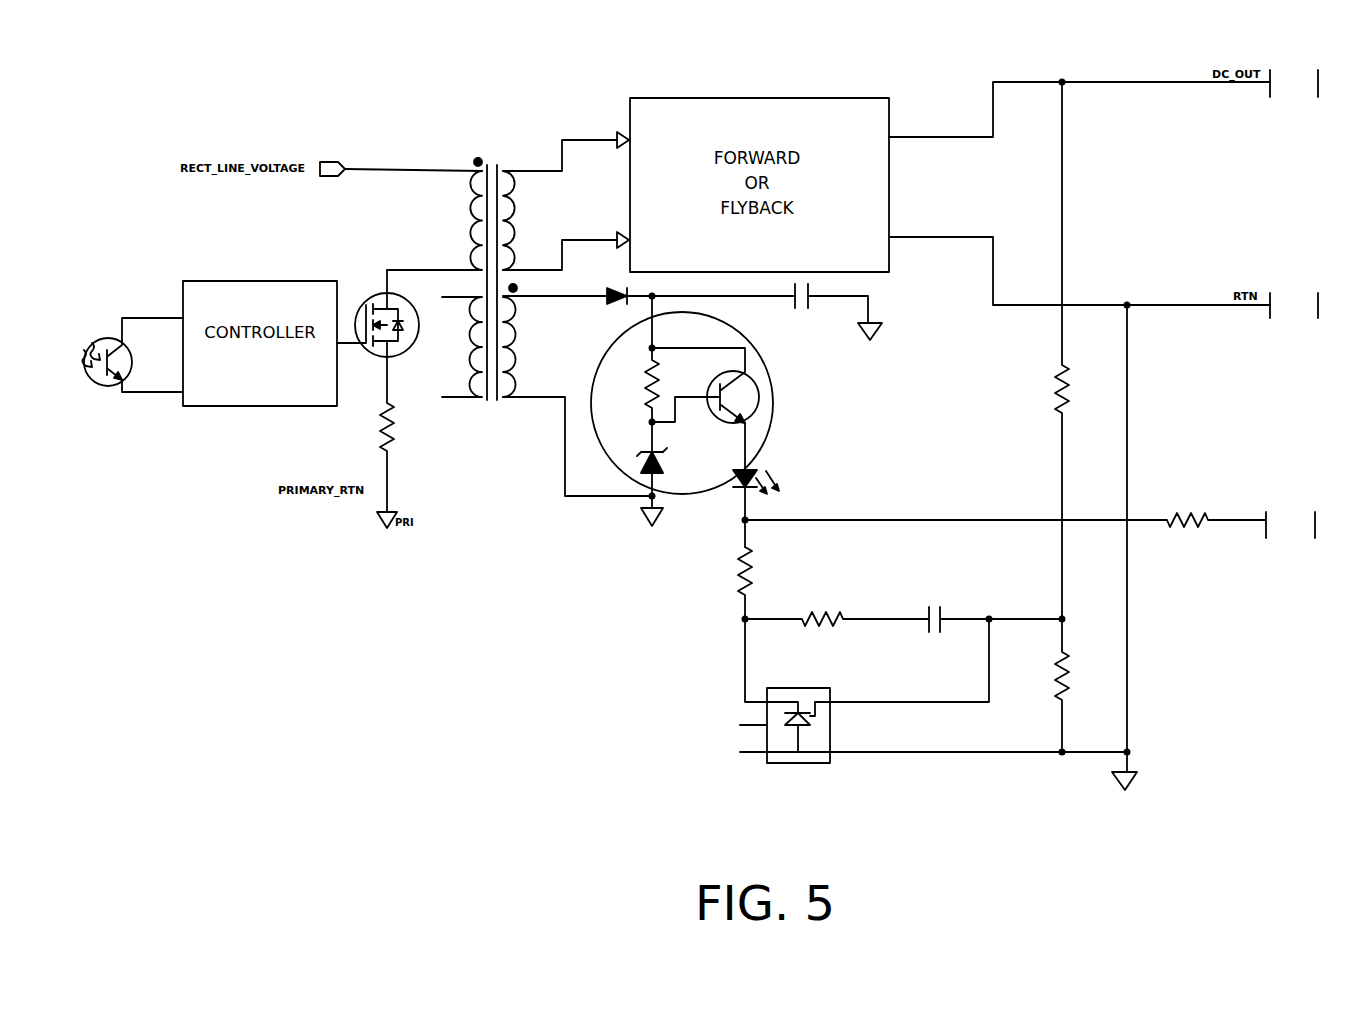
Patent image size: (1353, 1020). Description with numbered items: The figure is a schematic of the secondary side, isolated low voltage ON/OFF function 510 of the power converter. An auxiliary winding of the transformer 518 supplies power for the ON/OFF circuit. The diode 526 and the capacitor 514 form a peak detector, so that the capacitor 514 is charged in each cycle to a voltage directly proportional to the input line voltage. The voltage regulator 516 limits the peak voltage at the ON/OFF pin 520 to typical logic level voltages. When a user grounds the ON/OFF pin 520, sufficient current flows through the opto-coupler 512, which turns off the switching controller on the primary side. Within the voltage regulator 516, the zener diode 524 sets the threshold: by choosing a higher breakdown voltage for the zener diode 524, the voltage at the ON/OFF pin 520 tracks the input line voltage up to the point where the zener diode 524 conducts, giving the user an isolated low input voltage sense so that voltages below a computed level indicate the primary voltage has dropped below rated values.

The isolated low voltage ON/OFF function 510 is at (1140, 651).
The opto-coupler 512 is at (760, 470).
The capacitor 514 is at (800, 310).
The voltage regulator 516 is at (612, 448).
The transformer 518 is at (494, 157).
The ON/OFF pin 520 is at (1291, 508).
The zener diode 524 is at (665, 465).
The diode 526 is at (598, 286).